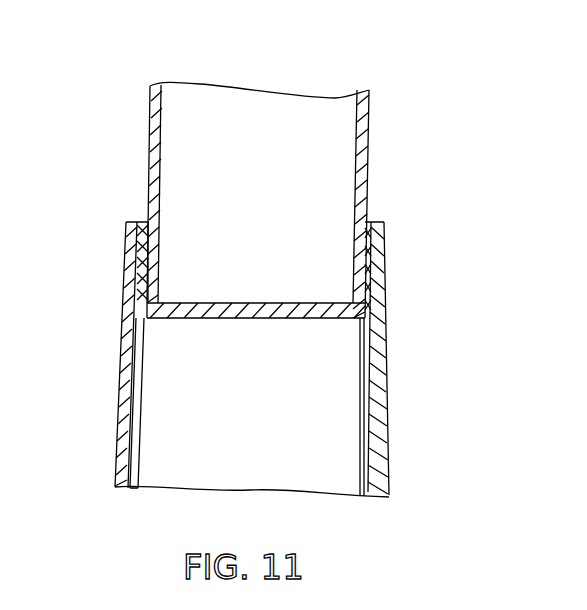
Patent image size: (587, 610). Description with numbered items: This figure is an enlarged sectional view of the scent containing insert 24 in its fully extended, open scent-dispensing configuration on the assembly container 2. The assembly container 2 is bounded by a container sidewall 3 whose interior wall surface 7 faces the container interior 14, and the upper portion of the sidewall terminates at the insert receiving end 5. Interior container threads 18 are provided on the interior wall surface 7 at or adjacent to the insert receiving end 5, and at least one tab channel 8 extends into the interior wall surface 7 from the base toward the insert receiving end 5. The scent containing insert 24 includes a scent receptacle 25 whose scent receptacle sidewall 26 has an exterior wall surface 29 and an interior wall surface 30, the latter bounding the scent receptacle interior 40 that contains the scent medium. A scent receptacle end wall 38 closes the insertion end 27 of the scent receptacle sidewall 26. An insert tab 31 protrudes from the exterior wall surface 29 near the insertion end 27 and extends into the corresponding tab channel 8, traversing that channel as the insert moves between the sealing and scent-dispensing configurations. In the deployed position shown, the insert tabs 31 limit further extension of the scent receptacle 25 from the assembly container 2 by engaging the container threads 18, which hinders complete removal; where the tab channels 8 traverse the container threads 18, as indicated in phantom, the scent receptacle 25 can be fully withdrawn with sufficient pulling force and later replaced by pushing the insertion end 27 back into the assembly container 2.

The assembly container 2 is at (203, 384).
The container sidewall 3 is at (118, 421).
The insert receiving end 5 is at (247, 271).
The interior wall surface 7 is at (131, 390).
The tab channel 8 is at (247, 407).
The container interior 14 is at (198, 486).
The container threads 18 is at (352, 259).
The scent containing insert 24 is at (132, 191).
The scent receptacle 25 is at (380, 151).
The scent receptacle sidewall 26 is at (409, 204).
The insertion end 27 is at (357, 323).
The exterior wall surface 29 is at (143, 194).
The interior wall surface 30 is at (163, 128).
The insert tab 31 is at (130, 302).
The scent receptacle end wall 38 is at (256, 358).
The scent receptacle interior 40 is at (246, 164).